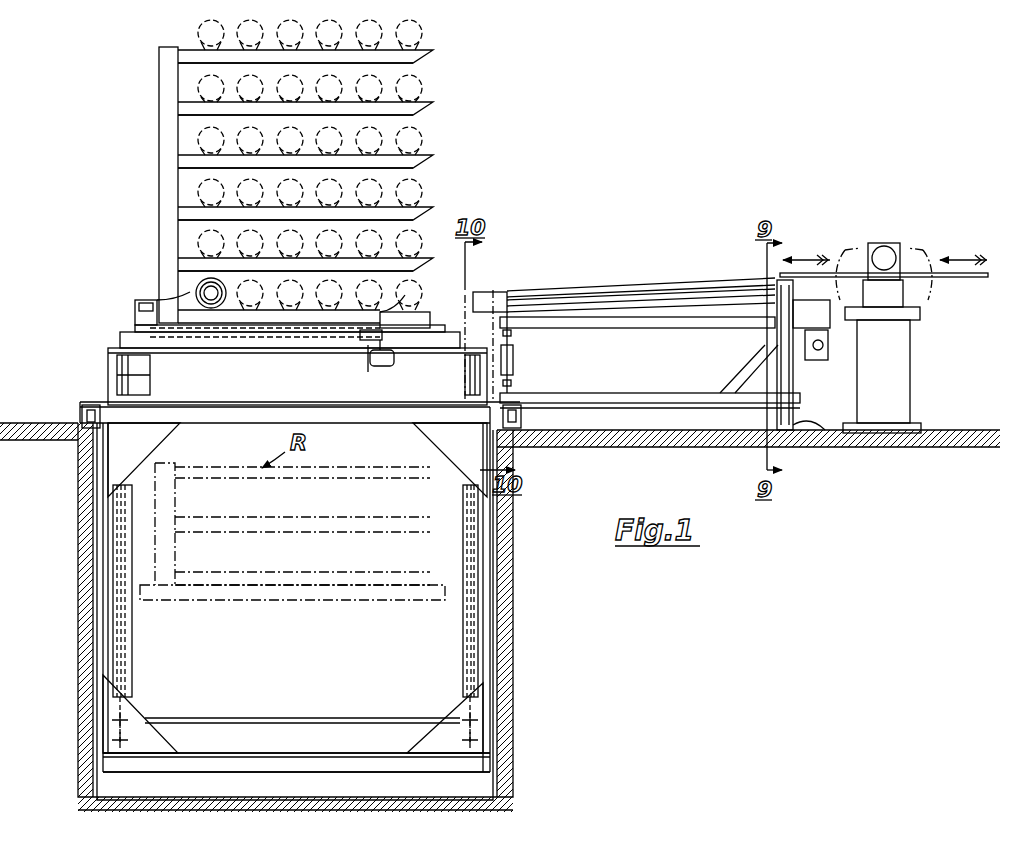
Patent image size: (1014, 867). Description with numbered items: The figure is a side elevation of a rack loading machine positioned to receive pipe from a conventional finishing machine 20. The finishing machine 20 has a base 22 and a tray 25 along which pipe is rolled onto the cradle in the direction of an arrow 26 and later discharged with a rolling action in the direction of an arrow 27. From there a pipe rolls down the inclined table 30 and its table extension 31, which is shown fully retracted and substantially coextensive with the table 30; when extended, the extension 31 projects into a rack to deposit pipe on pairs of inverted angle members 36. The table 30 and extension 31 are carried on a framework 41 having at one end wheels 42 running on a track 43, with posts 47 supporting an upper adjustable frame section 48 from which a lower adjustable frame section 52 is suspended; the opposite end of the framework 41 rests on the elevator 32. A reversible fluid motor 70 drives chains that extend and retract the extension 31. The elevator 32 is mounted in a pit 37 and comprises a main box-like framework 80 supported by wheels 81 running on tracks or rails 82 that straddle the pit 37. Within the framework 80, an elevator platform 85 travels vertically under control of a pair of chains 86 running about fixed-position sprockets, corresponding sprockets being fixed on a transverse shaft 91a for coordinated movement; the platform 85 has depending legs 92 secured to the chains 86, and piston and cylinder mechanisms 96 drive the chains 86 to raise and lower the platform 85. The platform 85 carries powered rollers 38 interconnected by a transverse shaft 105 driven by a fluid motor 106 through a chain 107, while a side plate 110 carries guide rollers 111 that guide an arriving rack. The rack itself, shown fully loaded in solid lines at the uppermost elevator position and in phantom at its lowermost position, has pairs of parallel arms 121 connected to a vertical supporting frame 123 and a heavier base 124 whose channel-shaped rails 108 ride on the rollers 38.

The finishing machine 20 is at (895, 240).
The base 22 is at (910, 357).
The tray 25 is at (975, 278).
The arrow 26 is at (965, 258).
The arrow 27 is at (815, 258).
The inclined table 30 is at (603, 280).
The table extension 31 is at (482, 292).
The elevator 32 is at (100, 372).
The inverted angle members 36 is at (433, 212).
The pit 37 is at (497, 560).
The powered rollers 38 is at (140, 335).
The framework 41 is at (672, 412).
The wheels 42 is at (828, 430).
The track 43 is at (800, 430).
The posts 47 is at (760, 348).
The upper adjustable frame section 48 is at (680, 290).
The lower adjustable frame section 52 is at (708, 332).
The reversible fluid motor 70 is at (826, 352).
The main box-like framework 80 is at (318, 765).
The wheels 81 is at (84, 412).
The tracks or rails 82 is at (80, 432).
The elevator platform 85 is at (285, 348).
The chains 86 is at (122, 637).
The transverse shaft 91a is at (262, 722).
The depending legs 92 is at (150, 372).
The piston and cylinder mechanisms 96 is at (122, 672).
The transverse shaft 105 is at (245, 336).
The fluid motor 106 is at (392, 362).
The chain 107 is at (370, 340).
The channel-shaped rails 108 is at (162, 296).
The side plate 110 is at (138, 315).
The guide rollers 111 is at (143, 303).
The parallel arms 121 is at (433, 55).
The supporting frame 123 is at (159, 183).
The base 124 is at (305, 340).